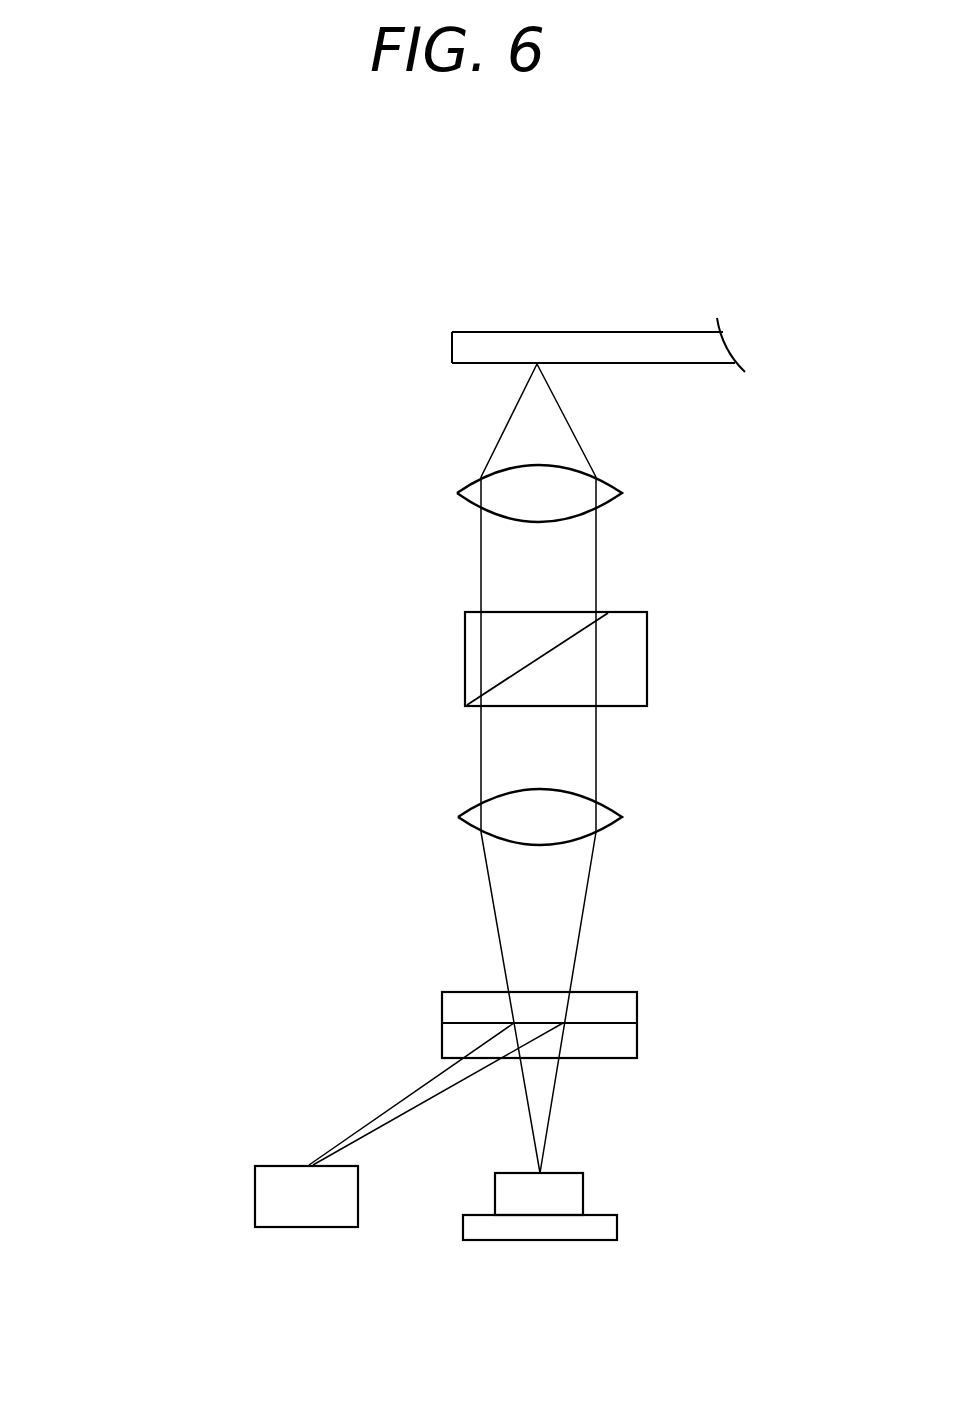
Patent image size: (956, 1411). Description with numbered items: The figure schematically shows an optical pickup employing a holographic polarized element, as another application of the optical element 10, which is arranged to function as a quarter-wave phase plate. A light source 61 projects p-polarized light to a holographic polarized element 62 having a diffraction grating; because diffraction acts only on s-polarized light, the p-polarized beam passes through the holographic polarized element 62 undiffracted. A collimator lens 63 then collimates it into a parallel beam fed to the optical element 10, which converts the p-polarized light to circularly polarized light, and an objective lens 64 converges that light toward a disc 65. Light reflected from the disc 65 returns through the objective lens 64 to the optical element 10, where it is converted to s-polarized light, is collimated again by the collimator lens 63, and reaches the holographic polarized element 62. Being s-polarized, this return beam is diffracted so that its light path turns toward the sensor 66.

The optical element 10 is at (465, 655).
The light source 61 is at (617, 1228).
The holographic polarized element 62 is at (638, 1042).
The collimator lens 63 is at (458, 817).
The objective lens 64 is at (457, 493).
The disc 65 is at (452, 347).
The sensor 66 is at (255, 1192).